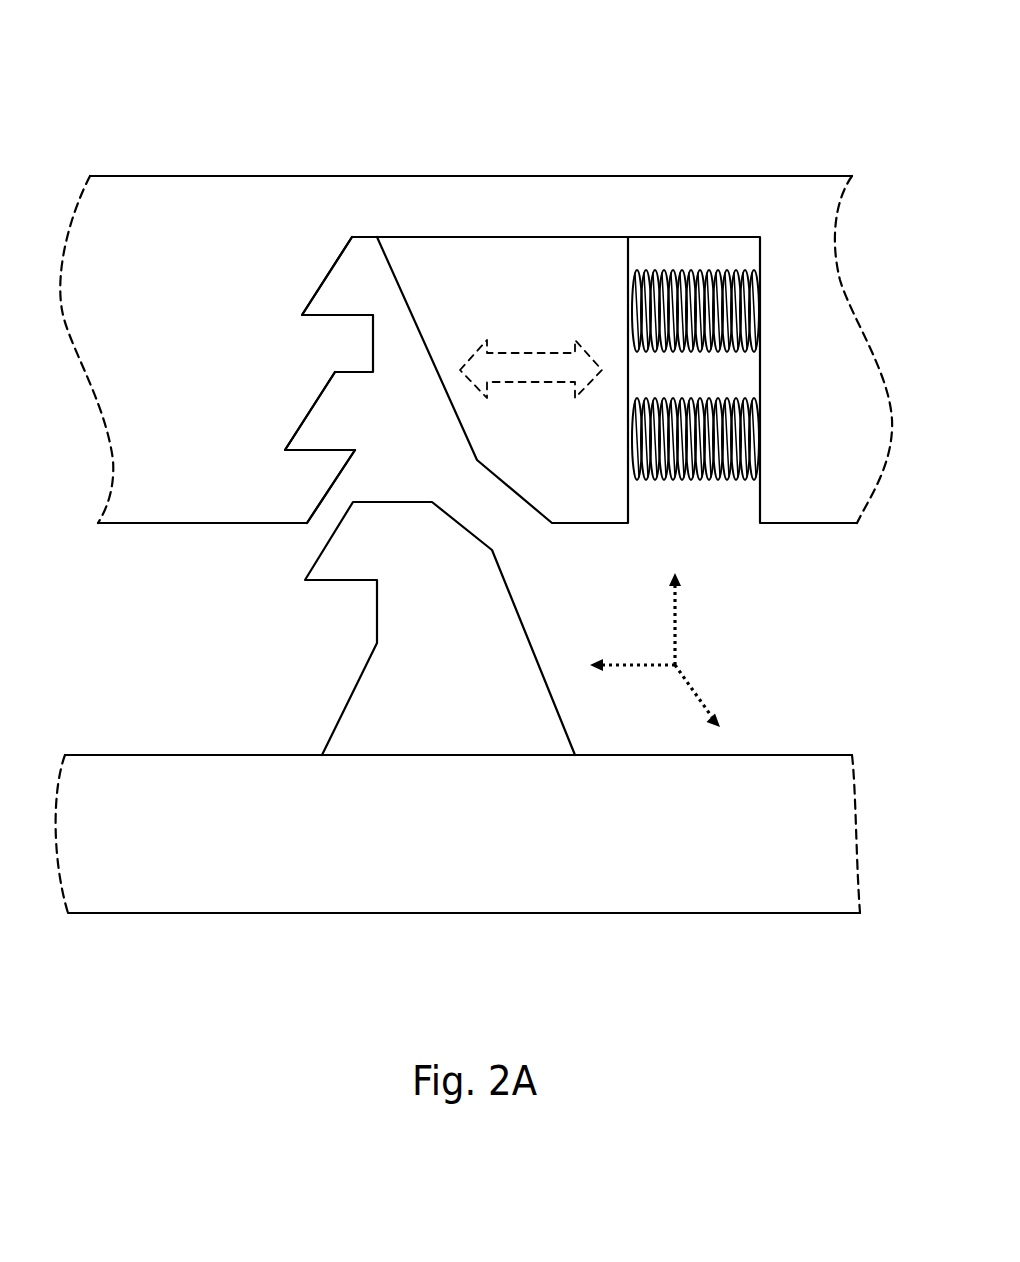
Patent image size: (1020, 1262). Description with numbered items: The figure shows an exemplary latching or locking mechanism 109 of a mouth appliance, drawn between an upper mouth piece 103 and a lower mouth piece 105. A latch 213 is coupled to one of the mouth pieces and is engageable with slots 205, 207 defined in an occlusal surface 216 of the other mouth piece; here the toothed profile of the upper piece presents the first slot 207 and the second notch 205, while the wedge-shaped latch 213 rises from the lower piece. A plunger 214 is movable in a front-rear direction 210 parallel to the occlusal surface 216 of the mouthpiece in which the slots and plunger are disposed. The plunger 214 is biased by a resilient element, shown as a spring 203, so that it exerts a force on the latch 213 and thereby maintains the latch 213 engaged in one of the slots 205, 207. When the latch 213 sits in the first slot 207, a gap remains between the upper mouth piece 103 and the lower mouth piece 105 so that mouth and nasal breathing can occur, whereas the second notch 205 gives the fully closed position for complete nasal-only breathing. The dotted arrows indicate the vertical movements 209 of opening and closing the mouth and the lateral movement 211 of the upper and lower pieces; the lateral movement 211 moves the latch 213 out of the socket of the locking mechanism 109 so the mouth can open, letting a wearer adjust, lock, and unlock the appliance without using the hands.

The locking mechanism 109 is at (467, 380).
The upper mouth piece 103 is at (194, 157).
The lower mouth piece 105 is at (140, 737).
The spring 203 is at (708, 256).
The second notch 205 is at (300, 284).
The first slot 207 is at (288, 399).
The vertical movements 209 is at (668, 583).
The front-rear direction 210 is at (539, 338).
The lateral movement 211 is at (718, 712).
The latch 213 is at (348, 668).
The plunger 214 is at (457, 274).
The occlusal surface 216 is at (143, 530).